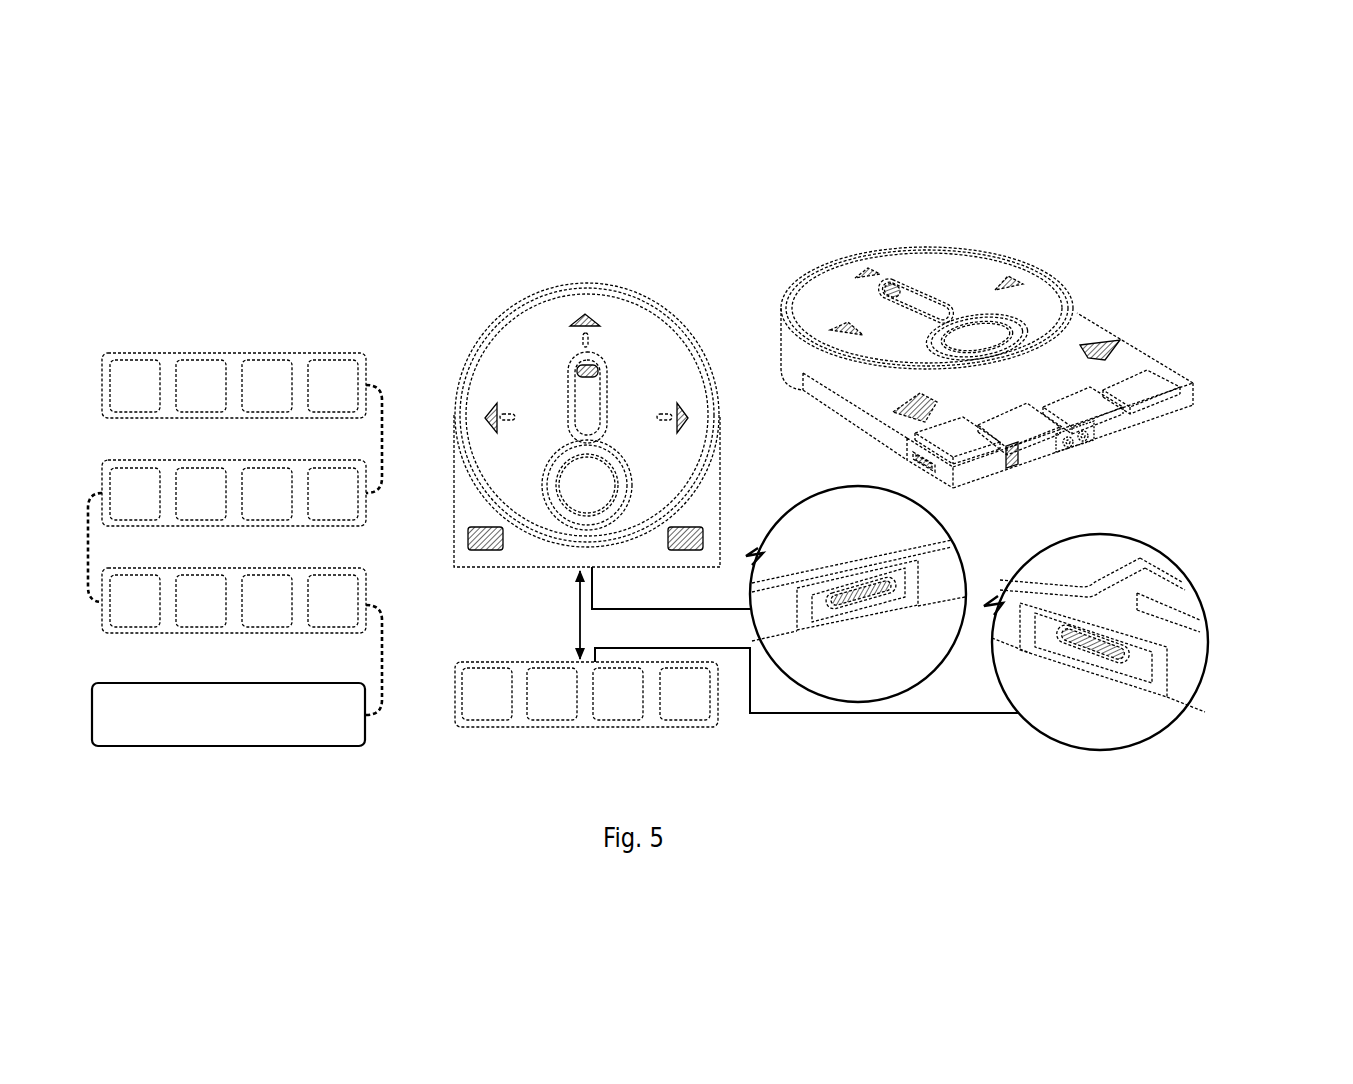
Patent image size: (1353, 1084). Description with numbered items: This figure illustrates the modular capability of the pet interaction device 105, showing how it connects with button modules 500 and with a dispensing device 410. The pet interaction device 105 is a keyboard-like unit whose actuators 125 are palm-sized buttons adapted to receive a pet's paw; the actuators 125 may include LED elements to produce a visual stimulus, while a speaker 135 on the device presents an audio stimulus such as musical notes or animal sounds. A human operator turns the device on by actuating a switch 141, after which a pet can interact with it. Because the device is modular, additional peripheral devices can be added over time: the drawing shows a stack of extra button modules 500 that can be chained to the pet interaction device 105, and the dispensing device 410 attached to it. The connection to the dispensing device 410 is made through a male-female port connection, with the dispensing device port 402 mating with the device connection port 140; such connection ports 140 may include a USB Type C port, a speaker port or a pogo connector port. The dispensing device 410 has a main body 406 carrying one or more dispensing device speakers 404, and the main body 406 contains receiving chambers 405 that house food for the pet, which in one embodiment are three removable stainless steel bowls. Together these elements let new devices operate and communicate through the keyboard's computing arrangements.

The button module 500 is at (218, 345).
The dispensing device 410 is at (625, 280).
The main body 406 is at (522, 312).
The receiving chamber 405 is at (977, 341).
The dispensing device speaker 404 is at (487, 538).
The pet interaction device 105 is at (537, 737).
The actuator 125 is at (615, 697).
The speaker 135 is at (1013, 469).
The switch 141 is at (1068, 447).
The dispensing device port 402 is at (855, 598).
The connection port 140 is at (1078, 647).